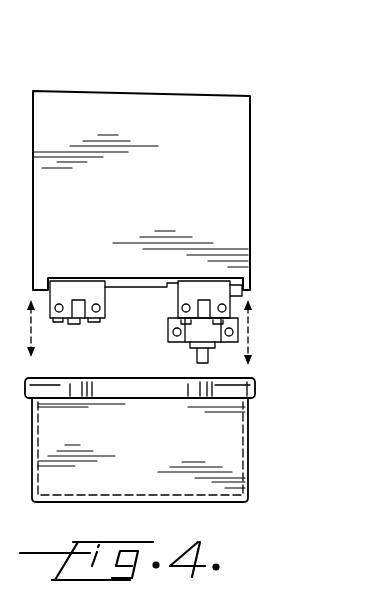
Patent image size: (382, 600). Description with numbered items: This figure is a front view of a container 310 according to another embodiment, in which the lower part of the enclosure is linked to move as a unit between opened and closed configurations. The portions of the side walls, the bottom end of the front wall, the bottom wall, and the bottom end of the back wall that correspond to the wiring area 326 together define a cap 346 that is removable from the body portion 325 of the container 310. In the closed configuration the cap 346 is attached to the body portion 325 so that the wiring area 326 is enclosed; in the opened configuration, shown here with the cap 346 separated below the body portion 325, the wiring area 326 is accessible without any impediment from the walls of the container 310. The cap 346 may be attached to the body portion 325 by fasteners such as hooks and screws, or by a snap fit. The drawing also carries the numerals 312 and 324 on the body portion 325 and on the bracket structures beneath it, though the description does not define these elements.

The container 310 is at (185, 216).
The housing 312 is at (183, 190).
The body portion 325 is at (220, 207).
The mounting brackets 324 is at (172, 312).
The wiring area 326 is at (220, 360).
The cap 346 is at (222, 455).